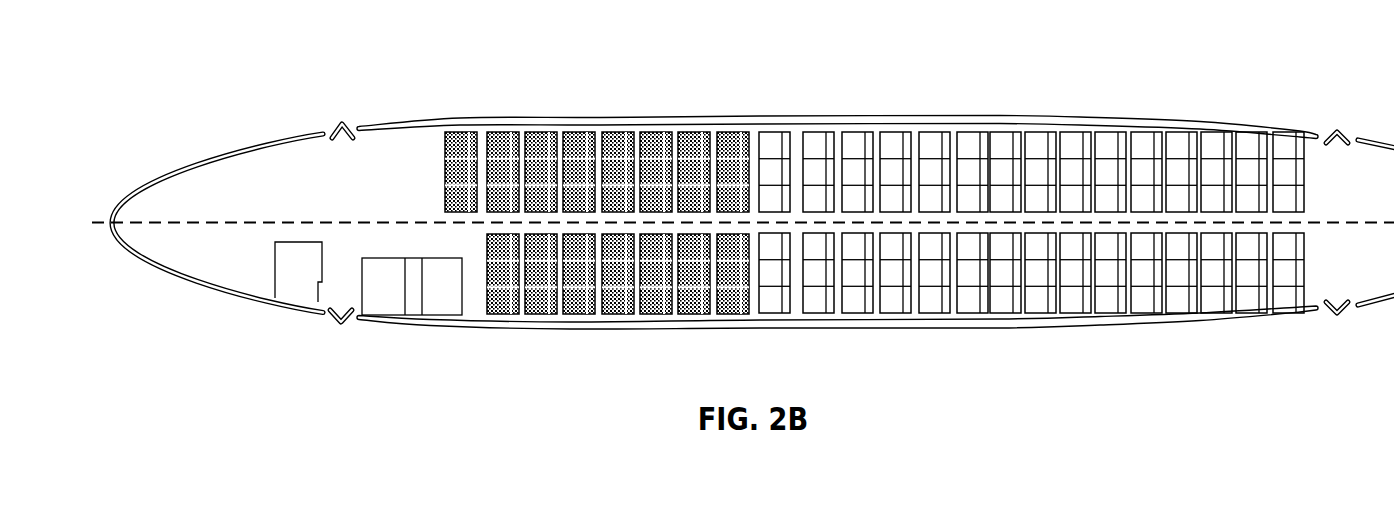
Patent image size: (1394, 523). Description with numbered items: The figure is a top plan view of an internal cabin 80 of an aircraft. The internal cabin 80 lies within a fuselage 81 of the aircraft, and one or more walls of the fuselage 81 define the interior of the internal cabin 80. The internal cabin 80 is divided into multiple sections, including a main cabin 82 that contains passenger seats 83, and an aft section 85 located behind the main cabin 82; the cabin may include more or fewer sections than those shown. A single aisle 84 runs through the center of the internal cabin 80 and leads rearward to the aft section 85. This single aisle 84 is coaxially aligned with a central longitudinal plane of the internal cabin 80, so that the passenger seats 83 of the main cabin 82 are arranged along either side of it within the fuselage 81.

The internal cabin 80 is at (360, 68).
The fuselage 81 is at (563, 124).
The main cabin 82 is at (500, 137).
The passenger seats 83 is at (772, 152).
The single aisle 84 is at (895, 217).
The aft section 85 is at (1323, 155).